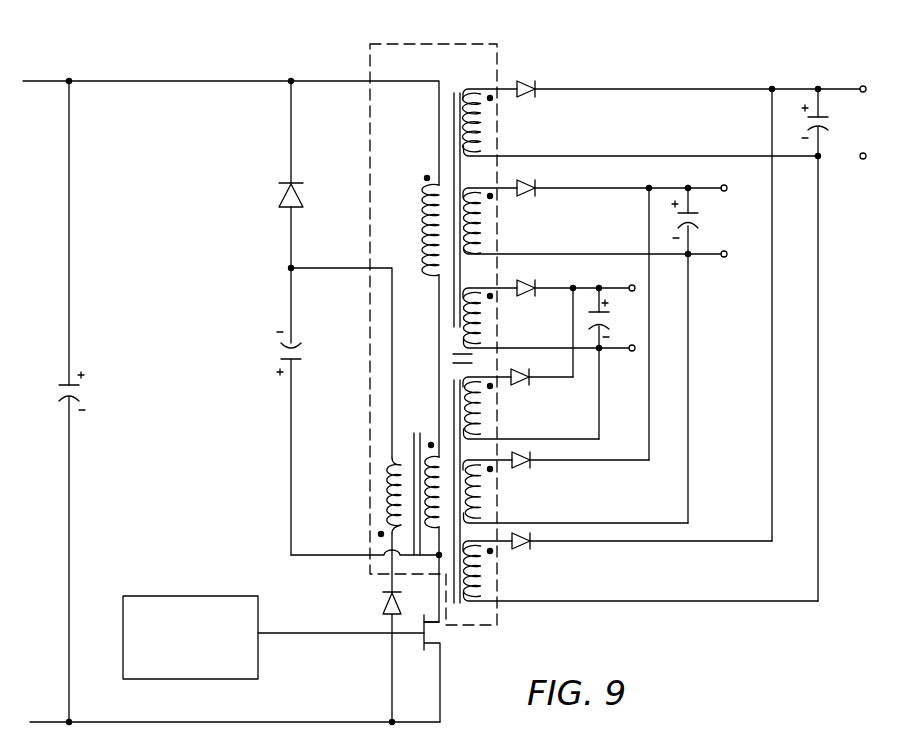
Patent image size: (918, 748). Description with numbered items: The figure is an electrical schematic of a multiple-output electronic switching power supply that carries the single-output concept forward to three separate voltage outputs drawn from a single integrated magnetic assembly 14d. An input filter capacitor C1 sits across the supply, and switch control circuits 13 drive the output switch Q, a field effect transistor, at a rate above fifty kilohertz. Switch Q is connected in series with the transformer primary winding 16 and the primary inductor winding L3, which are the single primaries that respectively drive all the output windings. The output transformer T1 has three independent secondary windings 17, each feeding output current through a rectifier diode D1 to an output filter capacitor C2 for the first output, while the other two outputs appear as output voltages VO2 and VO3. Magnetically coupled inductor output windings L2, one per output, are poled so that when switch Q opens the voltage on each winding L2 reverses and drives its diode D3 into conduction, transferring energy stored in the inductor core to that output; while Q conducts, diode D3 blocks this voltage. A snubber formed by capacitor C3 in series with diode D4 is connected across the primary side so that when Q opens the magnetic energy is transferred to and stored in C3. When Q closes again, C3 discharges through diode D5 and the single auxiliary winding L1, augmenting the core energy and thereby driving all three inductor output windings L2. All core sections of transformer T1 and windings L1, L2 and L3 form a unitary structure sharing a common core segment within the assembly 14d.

The integrated magnetic assembly 14d is at (500, 45).
The switch control circuits 13 is at (181, 597).
The output transformer T1 is at (457, 335).
The transformer primary winding 16 is at (417, 230).
The transformer secondary winding 17 is at (640, 219).
The rectifier diode D1 is at (688, 202).
The diode D3 is at (641, 476).
The inductor output winding L2 is at (640, 492).
The auxiliary winding L1 is at (385, 500).
The primary inductor winding L3 is at (439, 449).
The filter capacitor C1 is at (85, 391).
The output filter capacitor C2 is at (853, 122).
The snubber capacitor C3 is at (302, 381).
The snubber diode D4 is at (272, 147).
The diode D5 is at (375, 627).
The output switch Q is at (436, 636).
The second output voltage VO2 is at (709, 220).
The third output voltage VO3 is at (618, 321).